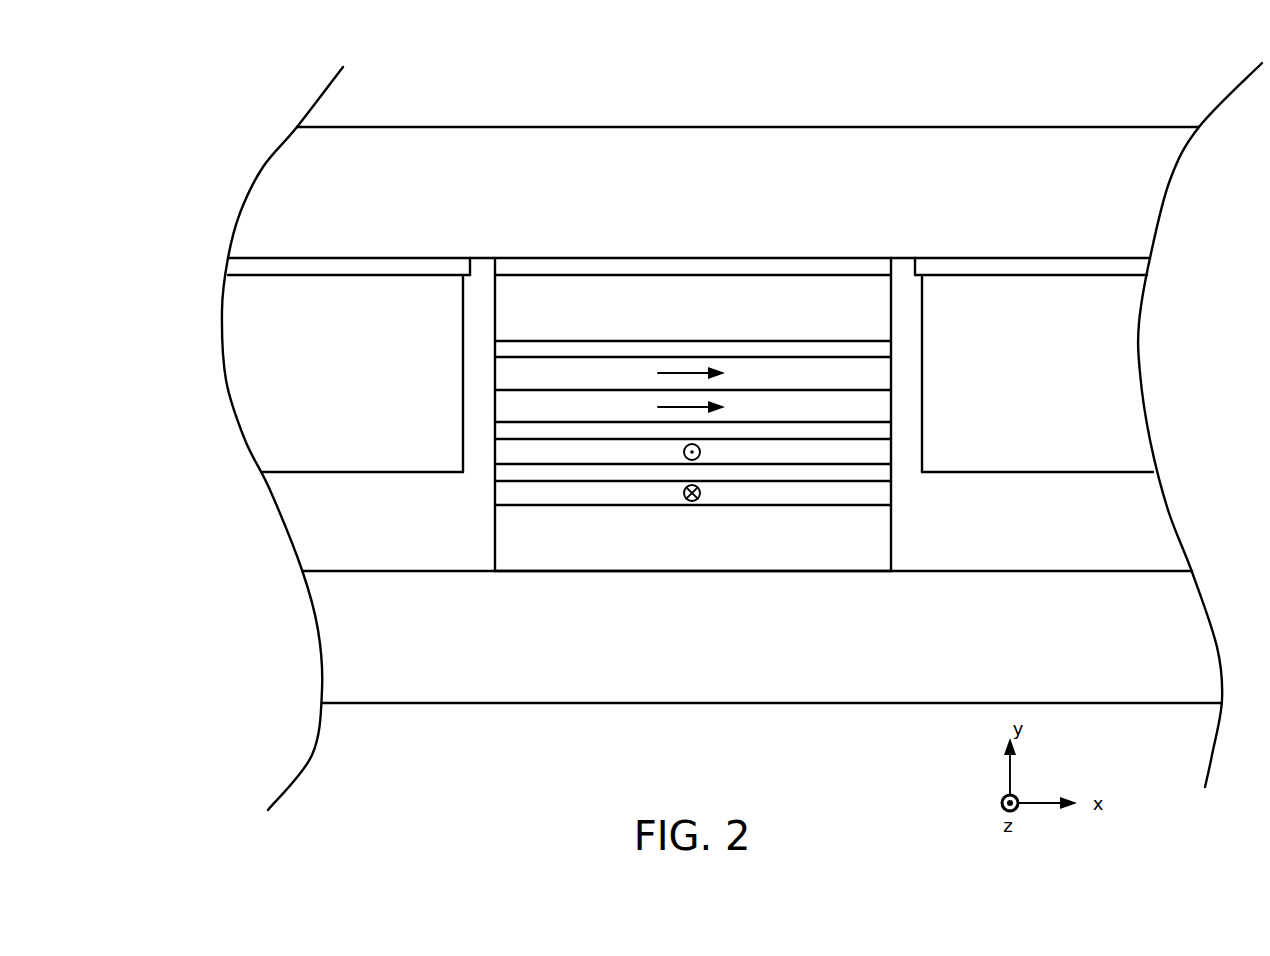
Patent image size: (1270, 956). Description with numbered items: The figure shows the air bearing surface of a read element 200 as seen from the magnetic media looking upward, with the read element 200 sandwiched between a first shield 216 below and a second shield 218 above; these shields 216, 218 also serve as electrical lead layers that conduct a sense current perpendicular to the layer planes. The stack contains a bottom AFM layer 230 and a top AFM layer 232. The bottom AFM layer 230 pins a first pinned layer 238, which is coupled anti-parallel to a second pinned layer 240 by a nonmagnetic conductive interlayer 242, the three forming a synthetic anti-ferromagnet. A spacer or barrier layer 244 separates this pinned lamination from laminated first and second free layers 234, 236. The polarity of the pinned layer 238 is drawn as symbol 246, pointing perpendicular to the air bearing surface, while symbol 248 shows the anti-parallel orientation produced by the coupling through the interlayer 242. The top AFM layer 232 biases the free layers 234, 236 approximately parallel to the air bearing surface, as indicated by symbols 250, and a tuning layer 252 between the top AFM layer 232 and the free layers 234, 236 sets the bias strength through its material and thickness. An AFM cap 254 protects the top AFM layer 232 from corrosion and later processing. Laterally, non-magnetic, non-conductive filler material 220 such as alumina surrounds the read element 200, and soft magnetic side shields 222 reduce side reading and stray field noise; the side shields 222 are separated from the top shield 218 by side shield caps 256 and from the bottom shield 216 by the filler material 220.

The read element 200 is at (468, 318).
The first shield 216 is at (674, 648).
The second shield 218 is at (674, 203).
The filler material 220 is at (344, 533).
The soft magnetic side shields 222 is at (312, 384).
The bottom AFM layer 230 is at (674, 548).
The top AFM layer 232 is at (674, 317).
The first free layer 234 is at (757, 418).
The second free layer 236 is at (757, 384).
The first pinned layer 238 is at (891, 487).
The second pinned layer 240 is at (891, 447).
The interlayer 242 is at (495, 470).
The spacer or barrier layer 244 is at (495, 430).
The polarity symbol of pinned layer 238 246 is at (700, 496).
The polarity symbol of AFM layer 232 248 is at (686, 458).
The polarity symbols of free layers 250 is at (667, 372).
The tuning layer 252 is at (775, 349).
The AFM cap 254 is at (705, 268).
The side shield caps 256 is at (362, 268).